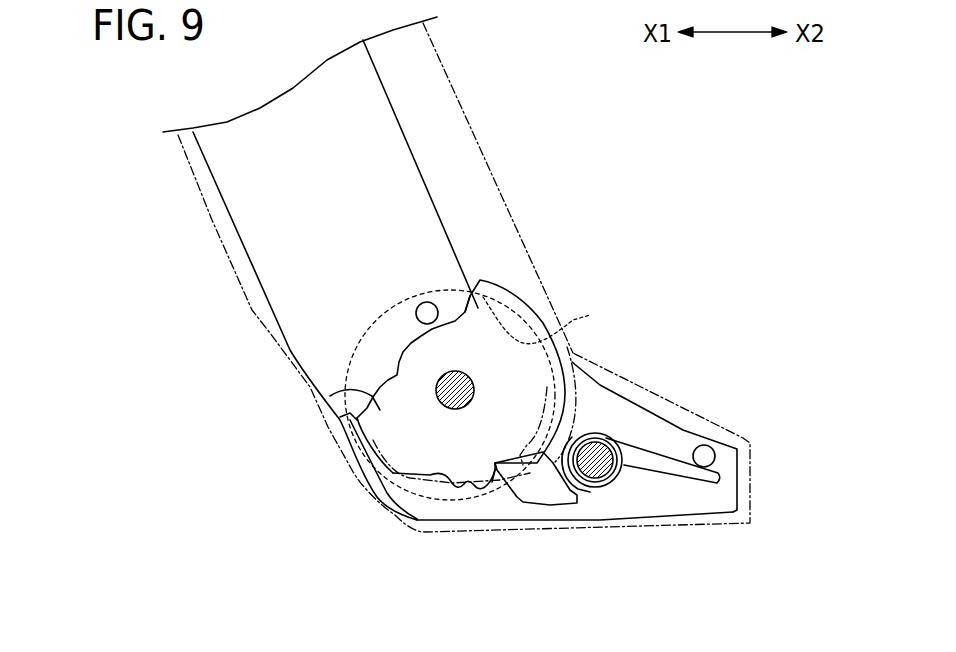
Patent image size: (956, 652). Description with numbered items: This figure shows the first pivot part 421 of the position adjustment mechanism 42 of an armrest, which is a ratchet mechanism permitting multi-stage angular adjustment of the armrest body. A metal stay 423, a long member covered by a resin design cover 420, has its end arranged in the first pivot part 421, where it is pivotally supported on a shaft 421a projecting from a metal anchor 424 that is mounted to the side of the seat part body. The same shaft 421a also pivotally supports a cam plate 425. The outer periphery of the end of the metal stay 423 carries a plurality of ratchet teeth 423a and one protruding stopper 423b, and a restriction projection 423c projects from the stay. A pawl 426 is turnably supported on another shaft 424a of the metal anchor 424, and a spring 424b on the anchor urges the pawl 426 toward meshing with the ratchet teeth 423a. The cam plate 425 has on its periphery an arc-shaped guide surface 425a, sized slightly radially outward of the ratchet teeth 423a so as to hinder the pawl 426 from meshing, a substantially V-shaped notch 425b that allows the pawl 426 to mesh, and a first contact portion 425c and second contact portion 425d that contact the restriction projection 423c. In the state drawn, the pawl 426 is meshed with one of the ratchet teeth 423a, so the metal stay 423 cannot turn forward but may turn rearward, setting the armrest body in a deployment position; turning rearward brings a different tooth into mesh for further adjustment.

The position adjustment mechanism 42 is at (205, 351).
The design cover 420 is at (447, 63).
The first pivot part 421 is at (262, 495).
The shaft 421a is at (437, 400).
The metal stay 423 is at (400, 117).
The ratchet teeth 423a is at (470, 482).
The protruding stopper 423b is at (570, 340).
The restriction projection 423c is at (425, 302).
The metal anchor 424 is at (653, 410).
The shaft 424a is at (628, 470).
The spring 424b is at (662, 450).
The cam plate 425 is at (343, 443).
The guide surface 425a is at (520, 300).
The notch 425b is at (493, 487).
The first contact portion 425c is at (465, 300).
The second contact portion 425d is at (350, 388).
The pawl 426 is at (530, 495).